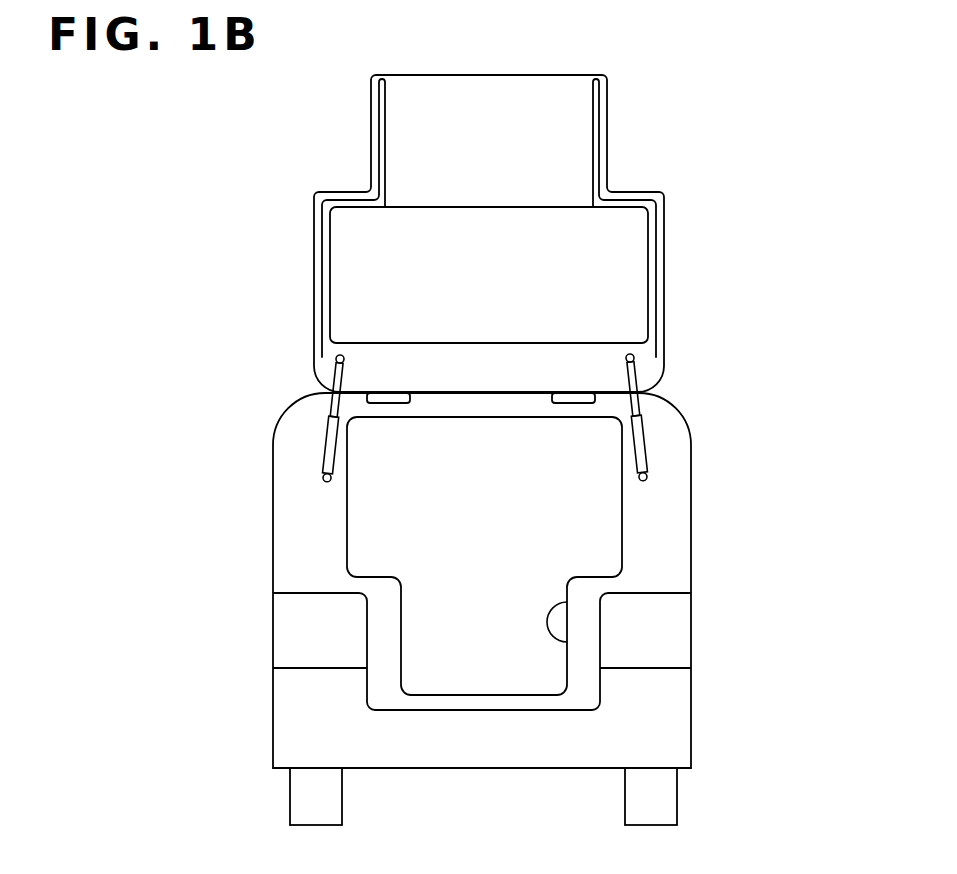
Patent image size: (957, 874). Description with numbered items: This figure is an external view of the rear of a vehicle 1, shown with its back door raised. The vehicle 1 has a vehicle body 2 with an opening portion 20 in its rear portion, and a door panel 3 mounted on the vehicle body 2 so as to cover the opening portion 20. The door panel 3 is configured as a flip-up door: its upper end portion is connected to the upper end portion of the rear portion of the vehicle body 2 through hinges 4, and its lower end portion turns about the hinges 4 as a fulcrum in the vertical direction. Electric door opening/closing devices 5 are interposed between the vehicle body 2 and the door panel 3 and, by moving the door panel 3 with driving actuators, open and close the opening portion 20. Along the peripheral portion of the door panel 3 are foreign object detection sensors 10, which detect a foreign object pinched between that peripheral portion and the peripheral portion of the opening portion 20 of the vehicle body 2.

The vehicle 1 is at (672, 100).
The vehicle body 2 is at (680, 562).
The door panel 3 is at (577, 117).
The hinges 4 is at (403, 403).
The electric door opening/closing devices 5 is at (641, 452).
The foreign object detection sensor 10 is at (318, 295).
The opening portion 20 is at (567, 642).